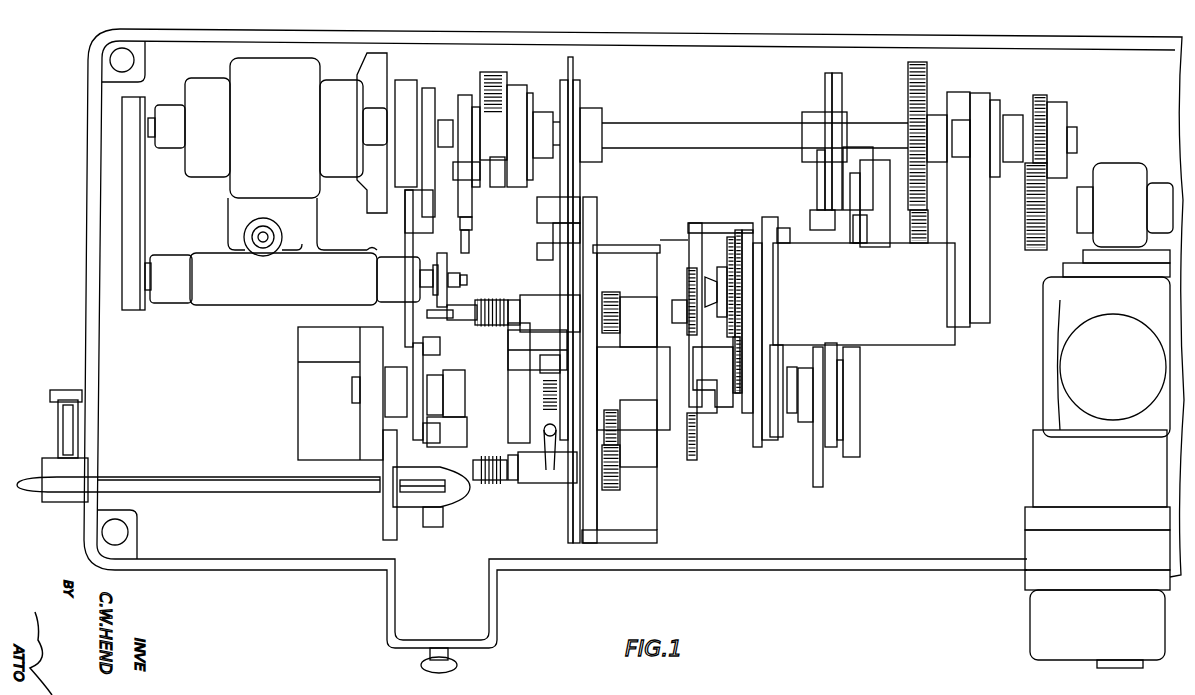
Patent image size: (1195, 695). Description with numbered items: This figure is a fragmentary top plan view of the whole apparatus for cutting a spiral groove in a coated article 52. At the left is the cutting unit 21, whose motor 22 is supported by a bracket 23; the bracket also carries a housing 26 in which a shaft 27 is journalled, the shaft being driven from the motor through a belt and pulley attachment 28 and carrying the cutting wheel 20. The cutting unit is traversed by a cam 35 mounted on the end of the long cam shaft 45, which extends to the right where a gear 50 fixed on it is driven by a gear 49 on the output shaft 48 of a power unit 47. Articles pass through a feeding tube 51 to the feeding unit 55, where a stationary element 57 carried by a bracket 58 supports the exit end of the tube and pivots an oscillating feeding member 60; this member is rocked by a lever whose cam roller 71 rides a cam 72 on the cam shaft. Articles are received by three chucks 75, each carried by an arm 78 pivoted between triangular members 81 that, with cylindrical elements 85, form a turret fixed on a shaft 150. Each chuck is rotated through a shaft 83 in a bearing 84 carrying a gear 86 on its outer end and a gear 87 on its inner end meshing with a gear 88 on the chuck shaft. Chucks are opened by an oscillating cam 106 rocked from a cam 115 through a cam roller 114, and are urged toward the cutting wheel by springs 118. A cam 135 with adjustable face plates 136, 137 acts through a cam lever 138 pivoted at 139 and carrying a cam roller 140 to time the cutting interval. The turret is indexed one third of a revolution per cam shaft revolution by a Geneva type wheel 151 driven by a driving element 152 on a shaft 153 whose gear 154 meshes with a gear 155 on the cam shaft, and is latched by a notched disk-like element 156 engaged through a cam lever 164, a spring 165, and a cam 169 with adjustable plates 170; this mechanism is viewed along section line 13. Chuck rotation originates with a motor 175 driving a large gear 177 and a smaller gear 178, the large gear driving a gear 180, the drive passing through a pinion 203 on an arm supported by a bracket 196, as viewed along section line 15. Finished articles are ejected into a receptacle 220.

The section line 13- 13 is at (867, 100).
The section line 15- 15 is at (680, 223).
The cutting wheel 20 is at (450, 277).
The cutting unit 21 is at (206, 332).
The motor 22 is at (228, 188).
The bracket 23 is at (228, 220).
The housing 26 is at (268, 297).
The shaft 27 is at (430, 268).
The belt and pulley attachment 28 is at (138, 194).
The cam 35 is at (365, 205).
The cam shaft 45 is at (708, 126).
The power unit 47 is at (1062, 383).
The output shaft 48 is at (1080, 186).
The gear 49 is at (1028, 225).
The gear 50 is at (1040, 96).
The feeding tube 51 is at (190, 482).
The article 52 is at (449, 318).
The feeding unit 55 is at (461, 530).
The stationary element 57 is at (381, 512).
The bracket 58 is at (365, 430).
The oscillating feeding member 60 is at (438, 527).
The cam roller 71 is at (478, 183).
The cam 72 is at (465, 95).
The chuck 75 is at (500, 296).
The arm 78 is at (557, 305).
The triangular members 81 is at (510, 372).
The shaft 83 is at (683, 315).
The bearing 84 is at (648, 285).
The cylindrical elements 85 is at (636, 357).
The gear 86 is at (693, 334).
The gear 87 is at (609, 410).
The gear 88 is at (611, 292).
The cam 106 is at (452, 405).
The cam roller 114 is at (407, 238).
The cam 115 is at (428, 92).
The springs 118 is at (556, 395).
The cam 135 is at (575, 72).
The face plate 136 is at (560, 95).
The face plate 137 is at (582, 96).
The cam lever 138 is at (568, 240).
The pivot 139 is at (537, 252).
The cam roller 140 is at (572, 210).
The shaft 150 is at (712, 395).
The Geneva type wheel 151 is at (855, 440).
The driving element 152 is at (862, 245).
The shaft 153 is at (962, 250).
The gear 154 is at (928, 222).
The gear 155 is at (928, 90).
The disk-like element 156 is at (814, 462).
The cam lever 164 is at (818, 205).
The spring 165 is at (828, 245).
The cam 169 is at (828, 85).
The adjustable plates 170 is at (834, 100).
The motor 175 is at (887, 344).
The large gear 177 is at (739, 232).
The smaller gear 178 is at (728, 250).
The gear 180 is at (737, 398).
The bracket 196 is at (770, 432).
The pinion 203 is at (688, 268).
The receptacle 220 is at (482, 638).